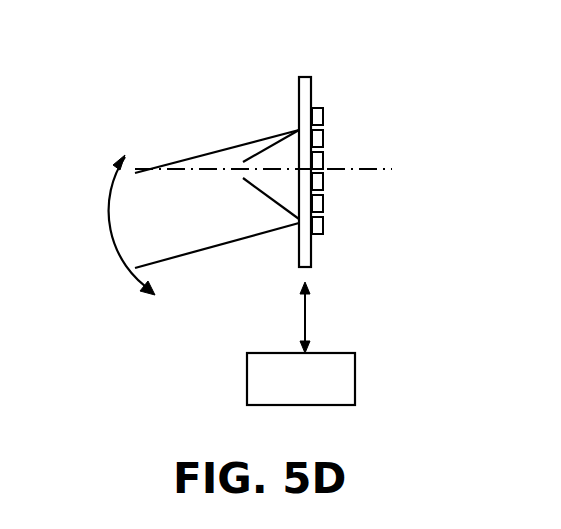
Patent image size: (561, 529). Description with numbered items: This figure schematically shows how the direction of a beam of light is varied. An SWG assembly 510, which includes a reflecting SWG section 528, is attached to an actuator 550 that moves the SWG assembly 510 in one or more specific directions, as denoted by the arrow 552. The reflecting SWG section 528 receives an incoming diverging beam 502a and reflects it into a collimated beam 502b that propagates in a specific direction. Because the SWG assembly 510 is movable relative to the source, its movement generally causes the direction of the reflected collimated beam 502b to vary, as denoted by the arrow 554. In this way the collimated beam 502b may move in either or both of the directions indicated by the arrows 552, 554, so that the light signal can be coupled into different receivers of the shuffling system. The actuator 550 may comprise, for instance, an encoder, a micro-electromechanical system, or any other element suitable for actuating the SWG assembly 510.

The SWG assembly 510 is at (301, 77).
The reflecting SWG section 528 is at (313, 107).
The incoming diverging beam 502a is at (250, 158).
The collimated beam 502b is at (183, 145).
The arrow denoting variation of beam direction 554 is at (123, 270).
The arrow denoting movement of SWG assembly 552 is at (306, 305).
The actuator 550 is at (247, 387).